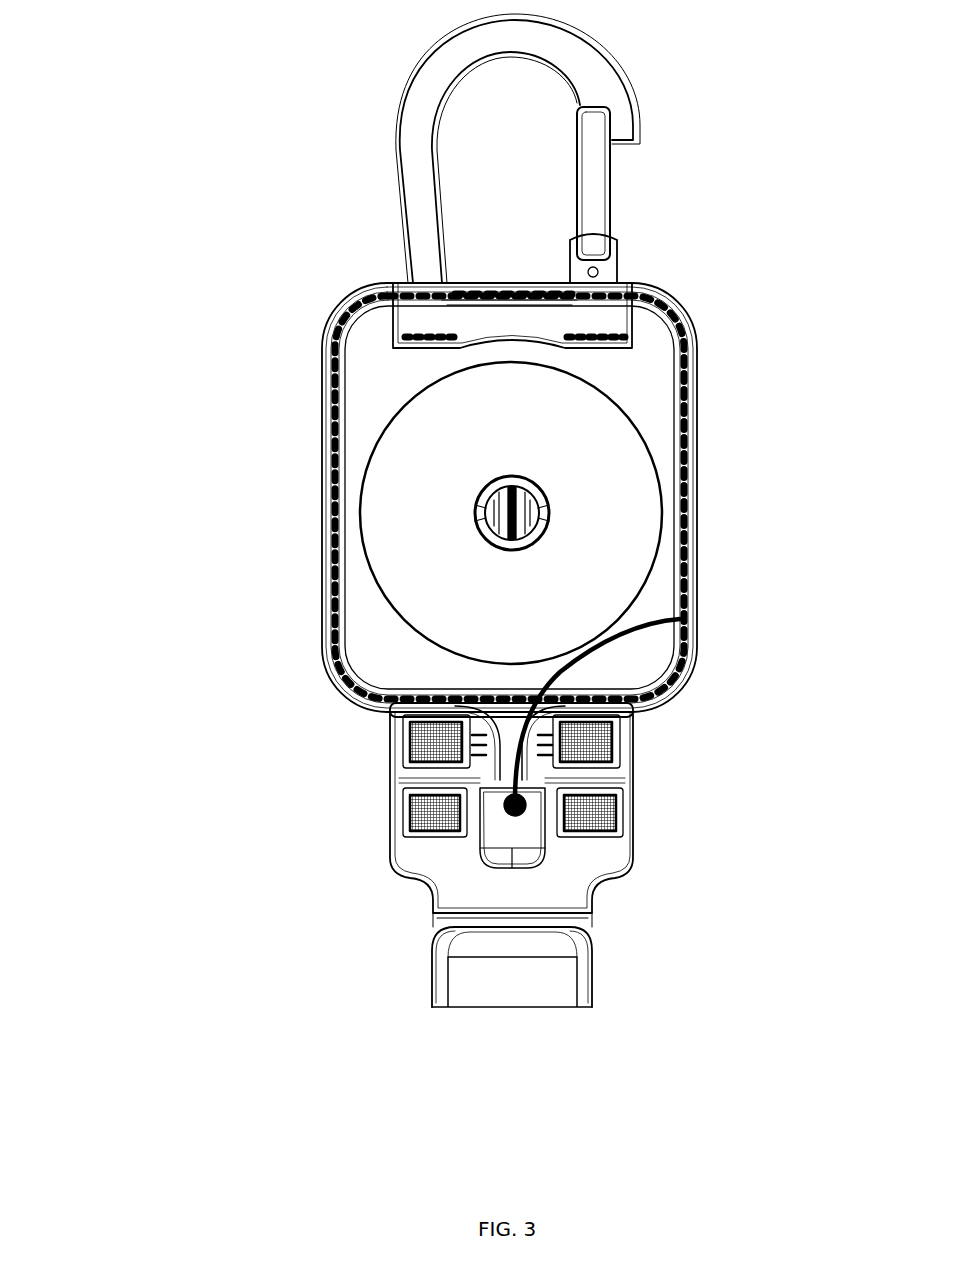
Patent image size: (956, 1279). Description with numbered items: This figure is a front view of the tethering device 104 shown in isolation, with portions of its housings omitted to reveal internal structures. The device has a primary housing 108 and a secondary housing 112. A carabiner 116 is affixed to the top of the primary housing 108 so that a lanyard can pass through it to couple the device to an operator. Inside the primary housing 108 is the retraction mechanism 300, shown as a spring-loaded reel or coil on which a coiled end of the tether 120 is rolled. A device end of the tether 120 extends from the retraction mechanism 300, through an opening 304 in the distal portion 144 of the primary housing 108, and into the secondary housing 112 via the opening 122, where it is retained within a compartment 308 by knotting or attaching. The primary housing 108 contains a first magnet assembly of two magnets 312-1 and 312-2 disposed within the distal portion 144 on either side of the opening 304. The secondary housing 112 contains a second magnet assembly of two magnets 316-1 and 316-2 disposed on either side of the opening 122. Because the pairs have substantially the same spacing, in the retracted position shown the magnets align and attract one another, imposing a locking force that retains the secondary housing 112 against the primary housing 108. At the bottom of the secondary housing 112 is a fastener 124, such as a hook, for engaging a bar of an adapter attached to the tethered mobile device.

The tethering device 104 is at (220, 168).
The carabiner 116 is at (405, 112).
The primary housing 108 is at (325, 492).
The retraction mechanism 300 is at (378, 432).
The opening 304 is at (507, 715).
The tether 120 is at (680, 619).
The magnet 312-1 is at (420, 748).
The magnet 312-2 is at (603, 737).
The magnet 316-1 is at (425, 810).
The magnet 316-2 is at (605, 810).
The distal portion 144 is at (635, 758).
The secondary housing 112 is at (403, 862).
The opening 122 is at (505, 812).
The compartment 308 is at (530, 832).
The fastener 124 is at (590, 978).